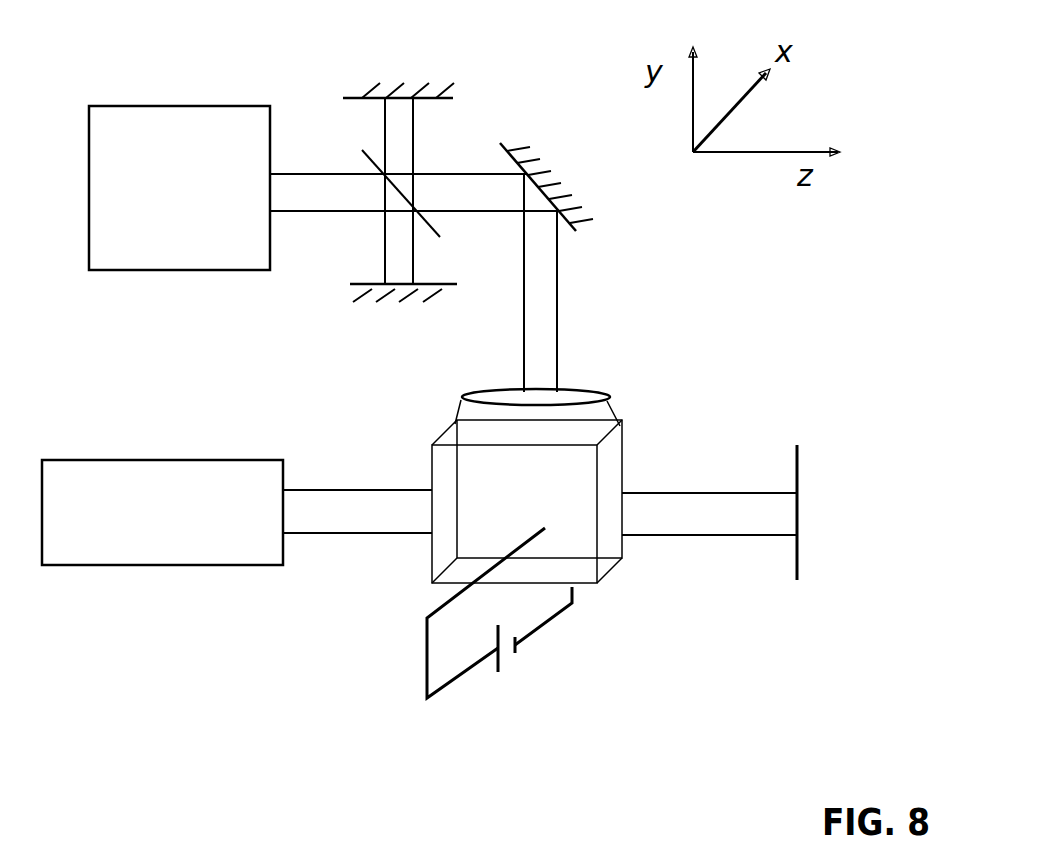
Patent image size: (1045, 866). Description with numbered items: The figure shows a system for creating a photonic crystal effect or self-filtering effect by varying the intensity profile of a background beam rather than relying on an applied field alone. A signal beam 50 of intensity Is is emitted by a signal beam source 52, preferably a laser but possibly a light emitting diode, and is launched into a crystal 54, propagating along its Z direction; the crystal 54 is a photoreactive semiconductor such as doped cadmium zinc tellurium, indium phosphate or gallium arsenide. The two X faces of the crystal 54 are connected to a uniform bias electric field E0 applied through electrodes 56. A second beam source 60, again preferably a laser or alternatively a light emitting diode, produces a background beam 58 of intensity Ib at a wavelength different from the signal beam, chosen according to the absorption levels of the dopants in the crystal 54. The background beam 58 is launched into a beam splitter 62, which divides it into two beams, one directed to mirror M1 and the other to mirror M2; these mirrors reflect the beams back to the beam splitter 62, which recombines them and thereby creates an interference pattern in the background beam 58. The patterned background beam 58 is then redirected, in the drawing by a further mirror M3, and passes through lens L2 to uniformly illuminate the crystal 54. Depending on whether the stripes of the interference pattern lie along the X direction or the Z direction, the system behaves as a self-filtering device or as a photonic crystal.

The background beam source 60 is at (192, 97).
The beam splitter 62 is at (362, 152).
The mirror M1 is at (372, 280).
The mirror M2 is at (417, 80).
The mirror M3 is at (585, 183).
The background beam 58 is at (558, 356).
The lens L2 is at (462, 395).
The signal beam source 52 is at (215, 450).
The signal beam 50 is at (378, 480).
The crystal 54 is at (428, 543).
The electrodes 56 is at (585, 587).
The uniform bias electric field E0 is at (535, 641).